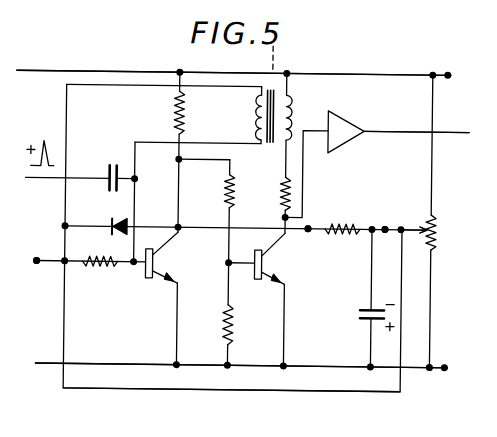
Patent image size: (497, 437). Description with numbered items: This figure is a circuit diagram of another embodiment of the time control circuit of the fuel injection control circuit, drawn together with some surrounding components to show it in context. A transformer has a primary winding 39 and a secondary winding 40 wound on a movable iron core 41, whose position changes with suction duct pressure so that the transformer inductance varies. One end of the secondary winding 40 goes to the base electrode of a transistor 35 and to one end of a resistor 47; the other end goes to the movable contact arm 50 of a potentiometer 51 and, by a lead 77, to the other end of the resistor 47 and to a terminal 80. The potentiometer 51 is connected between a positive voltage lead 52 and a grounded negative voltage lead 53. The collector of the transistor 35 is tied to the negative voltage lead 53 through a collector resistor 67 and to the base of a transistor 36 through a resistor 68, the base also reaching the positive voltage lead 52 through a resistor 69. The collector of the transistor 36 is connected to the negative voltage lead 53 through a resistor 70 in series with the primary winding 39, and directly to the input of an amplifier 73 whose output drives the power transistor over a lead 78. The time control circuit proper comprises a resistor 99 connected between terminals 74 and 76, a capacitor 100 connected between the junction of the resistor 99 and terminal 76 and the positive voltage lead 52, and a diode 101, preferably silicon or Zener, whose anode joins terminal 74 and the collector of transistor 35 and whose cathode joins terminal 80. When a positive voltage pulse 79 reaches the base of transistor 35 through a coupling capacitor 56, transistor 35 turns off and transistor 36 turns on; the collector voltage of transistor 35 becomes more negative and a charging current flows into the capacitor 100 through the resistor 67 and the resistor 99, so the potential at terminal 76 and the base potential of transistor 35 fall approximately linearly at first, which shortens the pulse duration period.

The voltage pulse 79 is at (44, 143).
The coupling capacitor 56 is at (107, 168).
The diode 101 is at (118, 218).
The terminal 80 is at (38, 267).
The resistor 47 is at (103, 269).
The transistor 35 is at (148, 281).
The transistor 36 is at (258, 281).
The resistor 69 is at (226, 327).
The resistor 67 is at (174, 117).
The resistor 68 is at (225, 193).
The resistor 70 is at (281, 194).
The secondary winding 40 is at (253, 115).
The iron core 41 is at (267, 129).
The primary winding 39 is at (292, 110).
The negative voltage lead 53 is at (385, 75).
The amplifier 73 is at (338, 148).
The lead 78 is at (400, 132).
The resistor 99 is at (341, 225).
The terminal 76 is at (386, 226).
The terminal 74 is at (308, 233).
The potentiometer 51 is at (437, 230).
The movable contact arm 50 is at (416, 234).
The capacitor 100 is at (364, 308).
The positive voltage lead 52 is at (330, 362).
The lead 77 is at (288, 392).